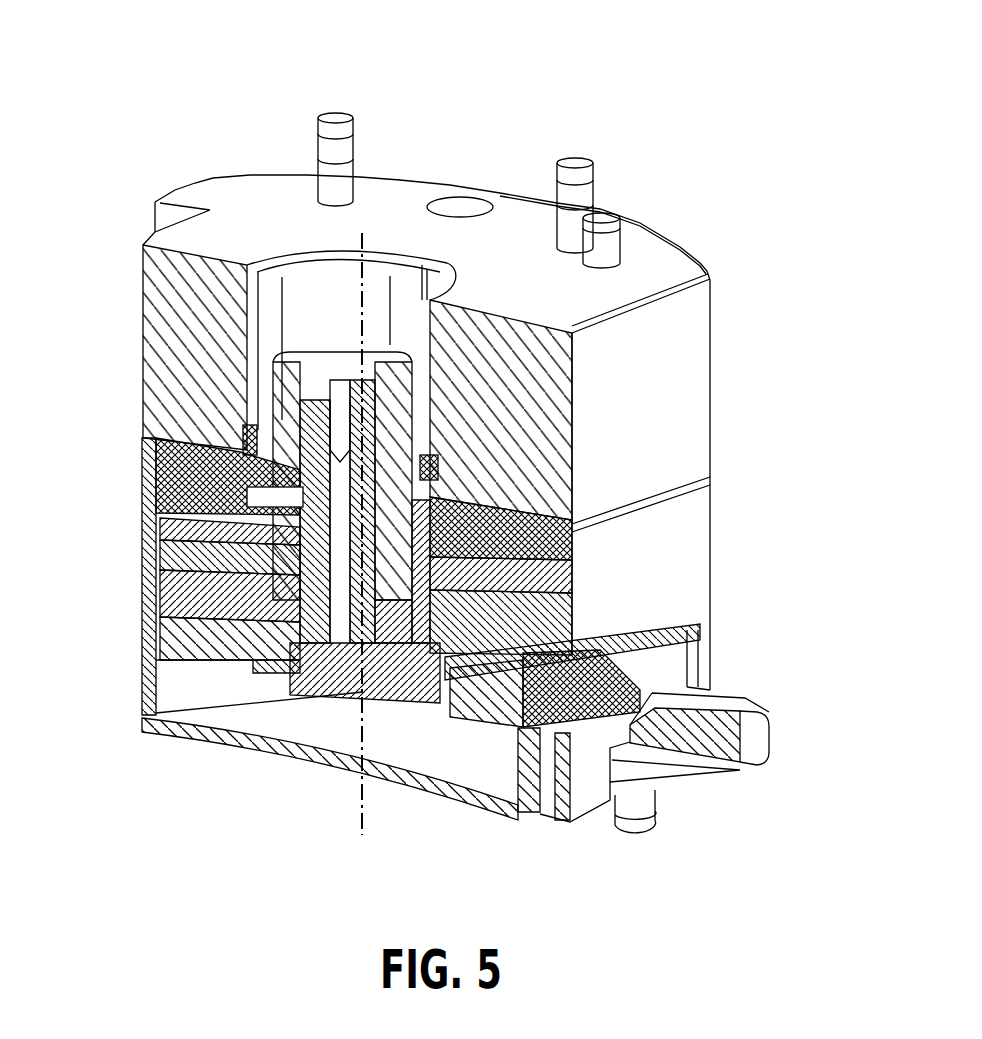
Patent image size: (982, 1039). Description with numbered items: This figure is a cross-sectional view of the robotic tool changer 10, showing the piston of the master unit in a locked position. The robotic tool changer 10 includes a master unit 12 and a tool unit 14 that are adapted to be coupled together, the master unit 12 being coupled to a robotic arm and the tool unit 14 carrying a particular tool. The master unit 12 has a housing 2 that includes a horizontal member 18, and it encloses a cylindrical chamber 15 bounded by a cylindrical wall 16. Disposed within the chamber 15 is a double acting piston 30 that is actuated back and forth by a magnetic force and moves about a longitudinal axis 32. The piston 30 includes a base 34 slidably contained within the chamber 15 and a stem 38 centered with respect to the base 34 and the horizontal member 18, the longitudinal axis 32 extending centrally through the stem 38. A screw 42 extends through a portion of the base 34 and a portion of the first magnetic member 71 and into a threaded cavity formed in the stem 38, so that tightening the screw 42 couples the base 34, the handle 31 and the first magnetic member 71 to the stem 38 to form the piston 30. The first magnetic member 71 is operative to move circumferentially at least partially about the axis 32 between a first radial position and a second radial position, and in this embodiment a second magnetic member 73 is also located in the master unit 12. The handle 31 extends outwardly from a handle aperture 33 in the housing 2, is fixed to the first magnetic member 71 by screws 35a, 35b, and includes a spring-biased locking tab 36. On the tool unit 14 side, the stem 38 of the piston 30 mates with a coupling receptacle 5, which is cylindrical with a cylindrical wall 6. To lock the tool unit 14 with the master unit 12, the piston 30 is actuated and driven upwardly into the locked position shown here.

The robotic tool changer 10 is at (463, 34).
The tool unit 14 is at (660, 153).
The housing 2 is at (698, 553).
The cylindrical wall 6 is at (297, 290).
The coupling receptacle 5 is at (385, 257).
The longitudinal axis 32 is at (363, 235).
The stem 38 is at (312, 512).
The horizontal member 18 is at (160, 453).
The second magnetic member 73 is at (167, 527).
The first magnetic member 71 is at (167, 567).
The base 34 is at (167, 615).
The cylindrical wall 16 is at (160, 685).
The screw 35a is at (228, 677).
The chamber 15 is at (232, 683).
The screw 42 is at (325, 663).
The piston 30 is at (334, 736).
The screw 35b is at (427, 670).
The locking tab 36 is at (593, 675).
The handle aperture 33 is at (685, 658).
The handle 31 is at (727, 705).
The master unit 12 is at (192, 845).